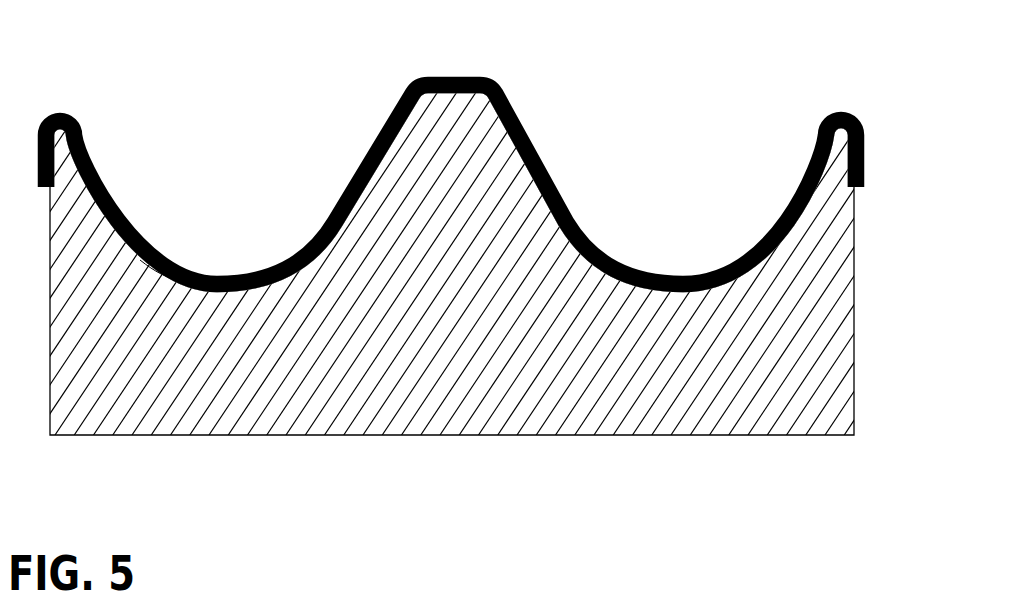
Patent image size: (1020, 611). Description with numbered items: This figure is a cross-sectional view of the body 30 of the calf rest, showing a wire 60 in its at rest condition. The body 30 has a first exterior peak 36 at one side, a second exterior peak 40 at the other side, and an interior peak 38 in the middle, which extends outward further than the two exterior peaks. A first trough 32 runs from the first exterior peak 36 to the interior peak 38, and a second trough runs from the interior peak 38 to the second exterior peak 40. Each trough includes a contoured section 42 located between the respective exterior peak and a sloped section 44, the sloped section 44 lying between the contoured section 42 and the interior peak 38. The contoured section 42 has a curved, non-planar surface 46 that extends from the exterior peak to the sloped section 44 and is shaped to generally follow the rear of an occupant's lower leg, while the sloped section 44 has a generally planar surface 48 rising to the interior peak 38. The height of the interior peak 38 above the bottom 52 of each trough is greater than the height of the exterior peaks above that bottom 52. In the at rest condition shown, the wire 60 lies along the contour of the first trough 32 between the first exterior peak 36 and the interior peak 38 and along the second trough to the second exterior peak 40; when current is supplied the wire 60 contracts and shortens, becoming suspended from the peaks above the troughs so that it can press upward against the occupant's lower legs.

The body 30 is at (860, 234).
The first trough 32 is at (195, 283).
The first exterior peak 36 is at (62, 117).
The interior peak 38 is at (447, 82).
The second exterior peak 40 is at (842, 118).
The contoured section 42 is at (88, 157).
The sloped section 44 is at (387, 127).
The curved surface 46 is at (110, 222).
The generally planar surface 48 is at (355, 183).
The bottom 52 is at (230, 283).
The wire 60 is at (278, 271).